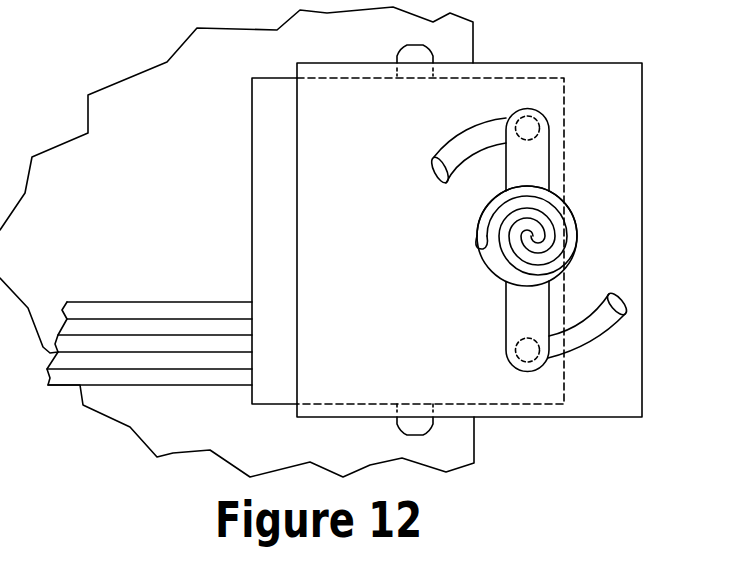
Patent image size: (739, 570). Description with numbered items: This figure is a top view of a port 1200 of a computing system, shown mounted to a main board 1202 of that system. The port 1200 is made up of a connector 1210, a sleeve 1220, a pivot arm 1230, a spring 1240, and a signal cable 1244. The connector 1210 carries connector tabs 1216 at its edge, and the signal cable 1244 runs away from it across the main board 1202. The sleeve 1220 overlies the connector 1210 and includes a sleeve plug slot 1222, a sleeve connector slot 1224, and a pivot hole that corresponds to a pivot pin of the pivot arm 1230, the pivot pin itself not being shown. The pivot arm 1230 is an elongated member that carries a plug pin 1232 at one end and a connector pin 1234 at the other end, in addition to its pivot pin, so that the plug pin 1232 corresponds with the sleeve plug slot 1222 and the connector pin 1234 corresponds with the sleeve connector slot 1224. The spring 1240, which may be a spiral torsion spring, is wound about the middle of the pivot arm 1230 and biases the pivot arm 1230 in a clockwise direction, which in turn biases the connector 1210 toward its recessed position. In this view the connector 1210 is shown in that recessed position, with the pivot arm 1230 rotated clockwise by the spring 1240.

The port 1200 is at (605, 434).
The main board 1202 is at (172, 440).
The connector 1210 is at (252, 172).
The connector tabs 1216 is at (417, 45).
The sleeve 1220 is at (529, 417).
The sleeve plug slot 1222 is at (434, 170).
The sleeve connector slot 1224 is at (615, 292).
The pivot arm 1230 is at (506, 299).
The plug pin 1232 is at (549, 126).
The connector pin 1234 is at (514, 350).
The spring 1240 is at (476, 238).
The signal cable 1244 is at (162, 302).